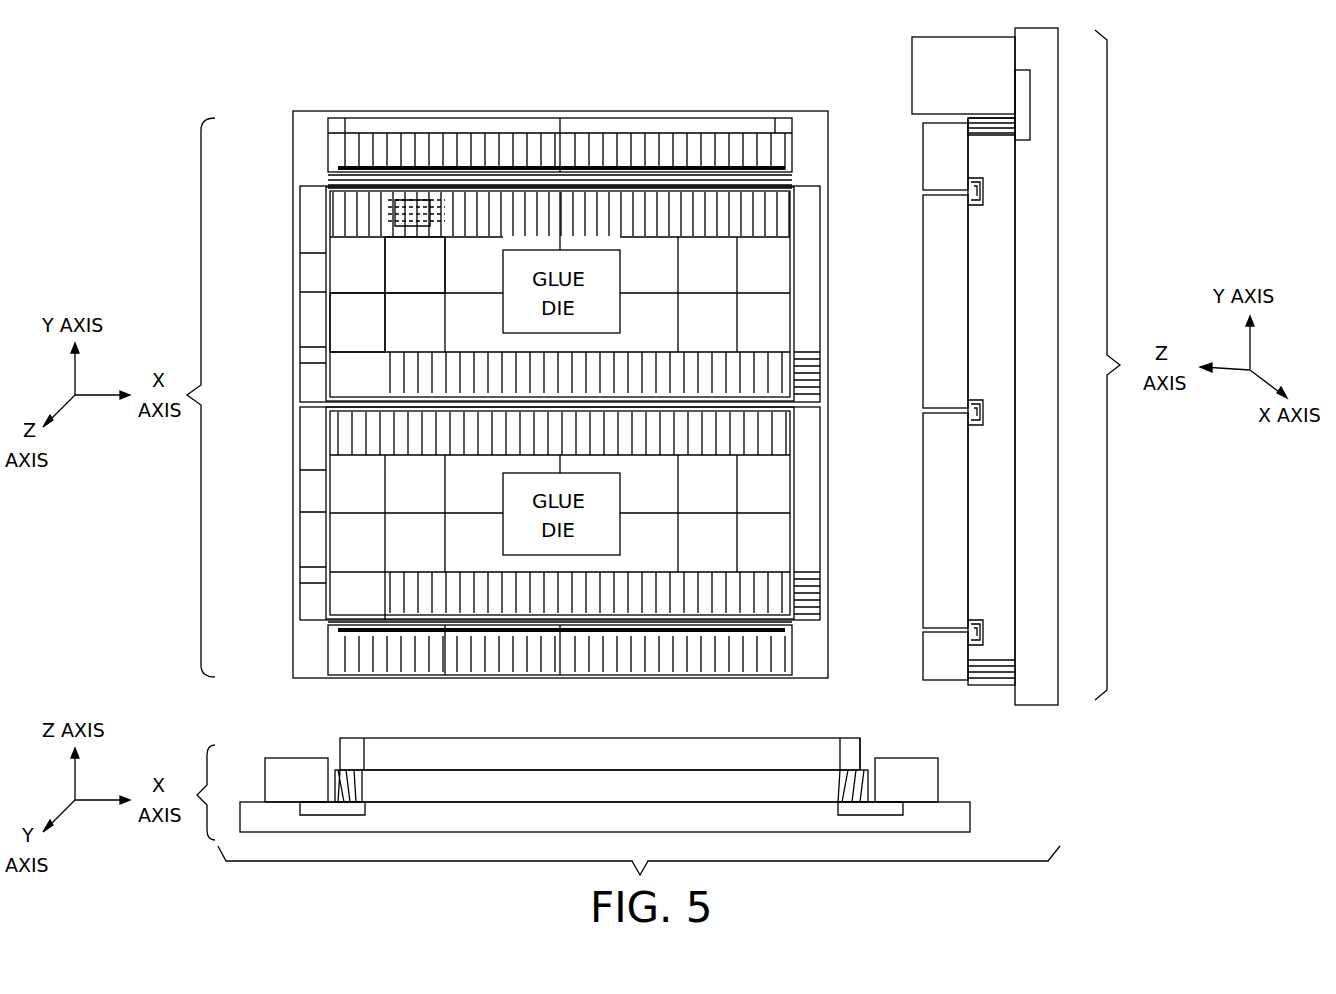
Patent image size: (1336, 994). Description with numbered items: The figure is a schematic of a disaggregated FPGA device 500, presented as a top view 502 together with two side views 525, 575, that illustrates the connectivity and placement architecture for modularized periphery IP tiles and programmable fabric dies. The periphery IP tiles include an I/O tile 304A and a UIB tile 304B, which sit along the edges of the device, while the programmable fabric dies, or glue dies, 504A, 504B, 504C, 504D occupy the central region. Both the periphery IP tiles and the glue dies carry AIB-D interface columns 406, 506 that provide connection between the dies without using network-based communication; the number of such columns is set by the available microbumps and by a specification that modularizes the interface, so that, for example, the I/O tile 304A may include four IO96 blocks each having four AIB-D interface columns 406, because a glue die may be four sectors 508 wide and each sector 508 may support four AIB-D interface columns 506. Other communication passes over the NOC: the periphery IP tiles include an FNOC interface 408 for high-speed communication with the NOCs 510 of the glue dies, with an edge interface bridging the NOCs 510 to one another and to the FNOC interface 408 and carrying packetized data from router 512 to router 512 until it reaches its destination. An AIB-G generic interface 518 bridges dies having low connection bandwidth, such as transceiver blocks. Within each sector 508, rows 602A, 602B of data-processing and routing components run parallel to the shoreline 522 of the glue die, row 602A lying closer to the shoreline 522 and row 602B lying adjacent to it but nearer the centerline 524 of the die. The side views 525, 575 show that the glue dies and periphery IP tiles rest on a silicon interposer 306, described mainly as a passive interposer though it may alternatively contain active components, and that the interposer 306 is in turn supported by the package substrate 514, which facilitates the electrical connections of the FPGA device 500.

The disaggregated FPGA device 500 is at (248, 106).
The top view 502 is at (350, 105).
The I/O tile 304A is at (355, 658).
The UIB tile 304B is at (510, 150).
The AIB-D interface columns 406 is at (678, 148).
The FNOC interface 408 is at (795, 185).
The programmable fabric die 504A is at (380, 290).
The programmable fabric die 504B is at (365, 515).
The programmable fabric die 504C is at (745, 305).
The programmable fabric die 504D is at (740, 520).
The AIB-D interface columns 506 is at (360, 228).
The sector 508 is at (355, 335).
The NOC 510 is at (680, 340).
The router 512 is at (445, 345).
The package substrate 514 is at (455, 825).
The AIB-G interface 518 is at (815, 517).
The shoreline 522 is at (330, 195).
The centerline 524 is at (470, 295).
The side view 525 is at (288, 752).
The side view 575 is at (902, 112).
The silicon interposer 306 is at (815, 660).
The row 602A is at (393, 240).
The row 602B is at (432, 240).